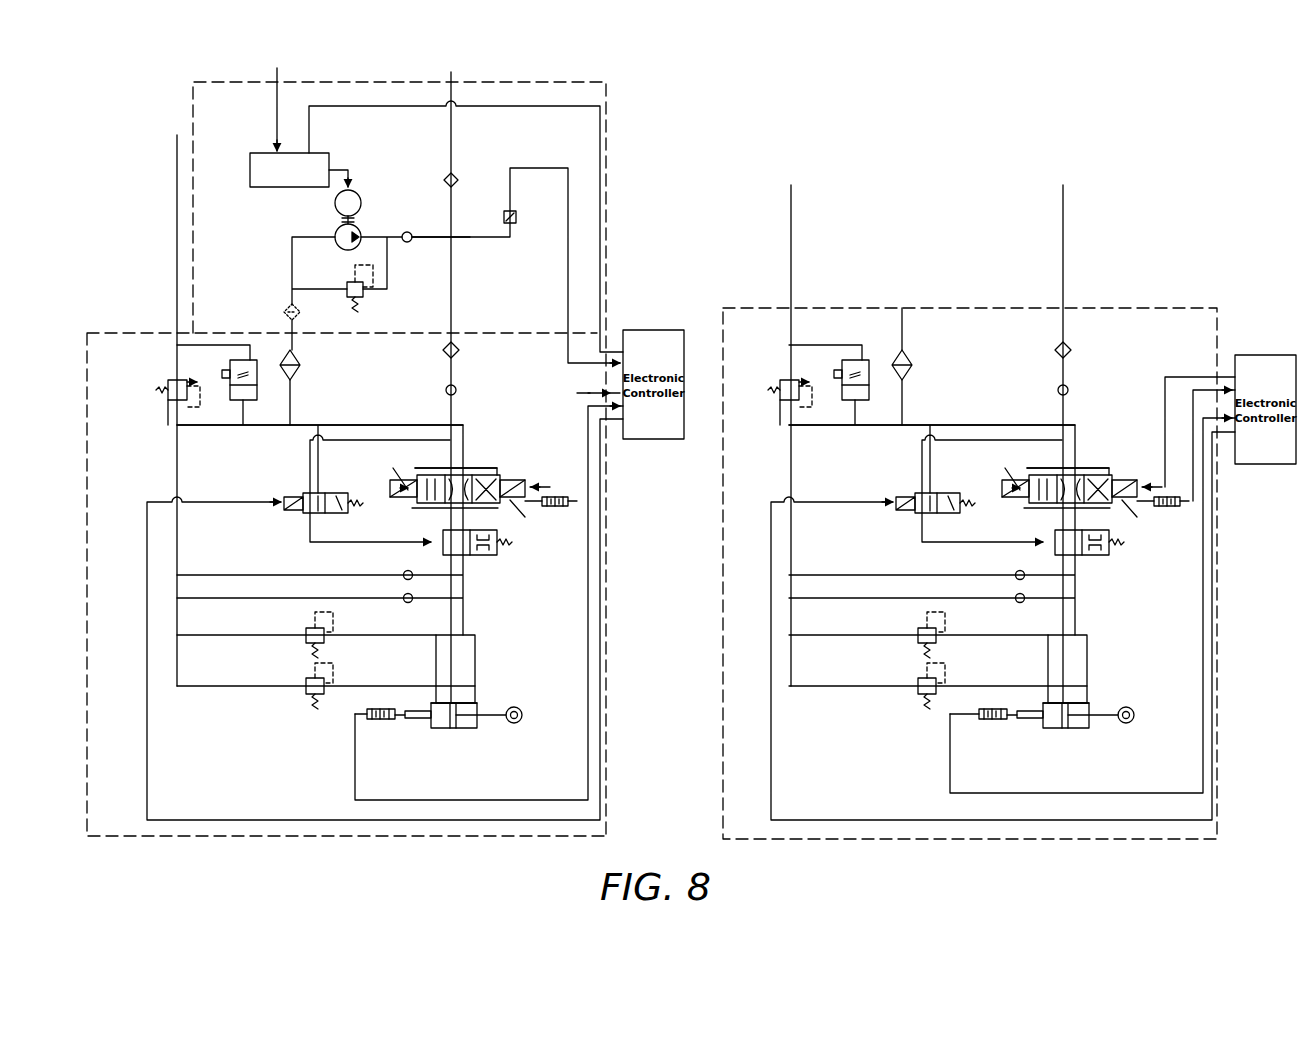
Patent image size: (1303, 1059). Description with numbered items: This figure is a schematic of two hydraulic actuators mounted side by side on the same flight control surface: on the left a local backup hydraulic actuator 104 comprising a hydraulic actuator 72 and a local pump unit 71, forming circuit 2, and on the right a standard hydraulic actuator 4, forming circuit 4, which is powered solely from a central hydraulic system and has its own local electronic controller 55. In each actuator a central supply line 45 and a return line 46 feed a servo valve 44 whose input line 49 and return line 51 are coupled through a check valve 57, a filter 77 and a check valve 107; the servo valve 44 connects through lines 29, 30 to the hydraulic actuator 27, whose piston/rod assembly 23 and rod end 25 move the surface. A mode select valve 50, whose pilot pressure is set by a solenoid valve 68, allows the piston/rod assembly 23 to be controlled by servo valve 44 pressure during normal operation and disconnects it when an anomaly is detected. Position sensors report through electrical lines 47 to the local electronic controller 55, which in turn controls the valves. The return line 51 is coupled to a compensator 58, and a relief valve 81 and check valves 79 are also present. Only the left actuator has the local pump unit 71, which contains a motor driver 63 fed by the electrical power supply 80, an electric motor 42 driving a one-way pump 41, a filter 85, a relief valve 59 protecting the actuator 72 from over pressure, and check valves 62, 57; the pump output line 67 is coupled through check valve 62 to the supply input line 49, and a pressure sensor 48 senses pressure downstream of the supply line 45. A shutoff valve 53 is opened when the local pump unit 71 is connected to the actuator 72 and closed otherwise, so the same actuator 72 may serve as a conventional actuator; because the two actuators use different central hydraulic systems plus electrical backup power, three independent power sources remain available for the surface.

The first hydraulic actuation circuit 2 is at (118, 776).
The standard hydraulic actuator 4 is at (740, 690).
The piston/rod assembly 23 is at (428, 712).
The actuator rod end 25 is at (495, 728).
The hydraulic actuator 27 is at (438, 742).
The line 29 is at (436, 655).
The line 30 is at (476, 688).
The one-way pump 41 is at (335, 230).
The electric motor 42 is at (360, 196).
The servo valve 44 is at (487, 472).
The supply line 45 is at (452, 70).
The return line 46 is at (178, 158).
The electrical lines 47 is at (572, 508).
The pressure sensor 48 is at (511, 211).
The input line 49 is at (445, 468).
The mode select valve 50 is at (505, 555).
The return line 51 is at (378, 425).
The shutoff valve 53 is at (302, 365).
The local electronic controller 55 is at (662, 330).
The check valve 57 is at (451, 178).
The compensator 58 is at (262, 385).
The relief valve 59 is at (365, 290).
The check valve 62 is at (407, 243).
The motor driver 63 is at (262, 153).
The output line 67 is at (362, 232).
The solenoid valve 68 is at (335, 493).
The local pump unit 71 is at (226, 78).
The hydraulic actuator 72 is at (86, 355).
The filter 77 is at (460, 350).
The check valves 79 is at (406, 574).
The electrical power supply 80 is at (320, 66).
The relief valve 81 is at (168, 385).
The filter 85 is at (287, 306).
The local backup hydraulic actuator 104 is at (666, 76).
The check valve 107 is at (458, 390).